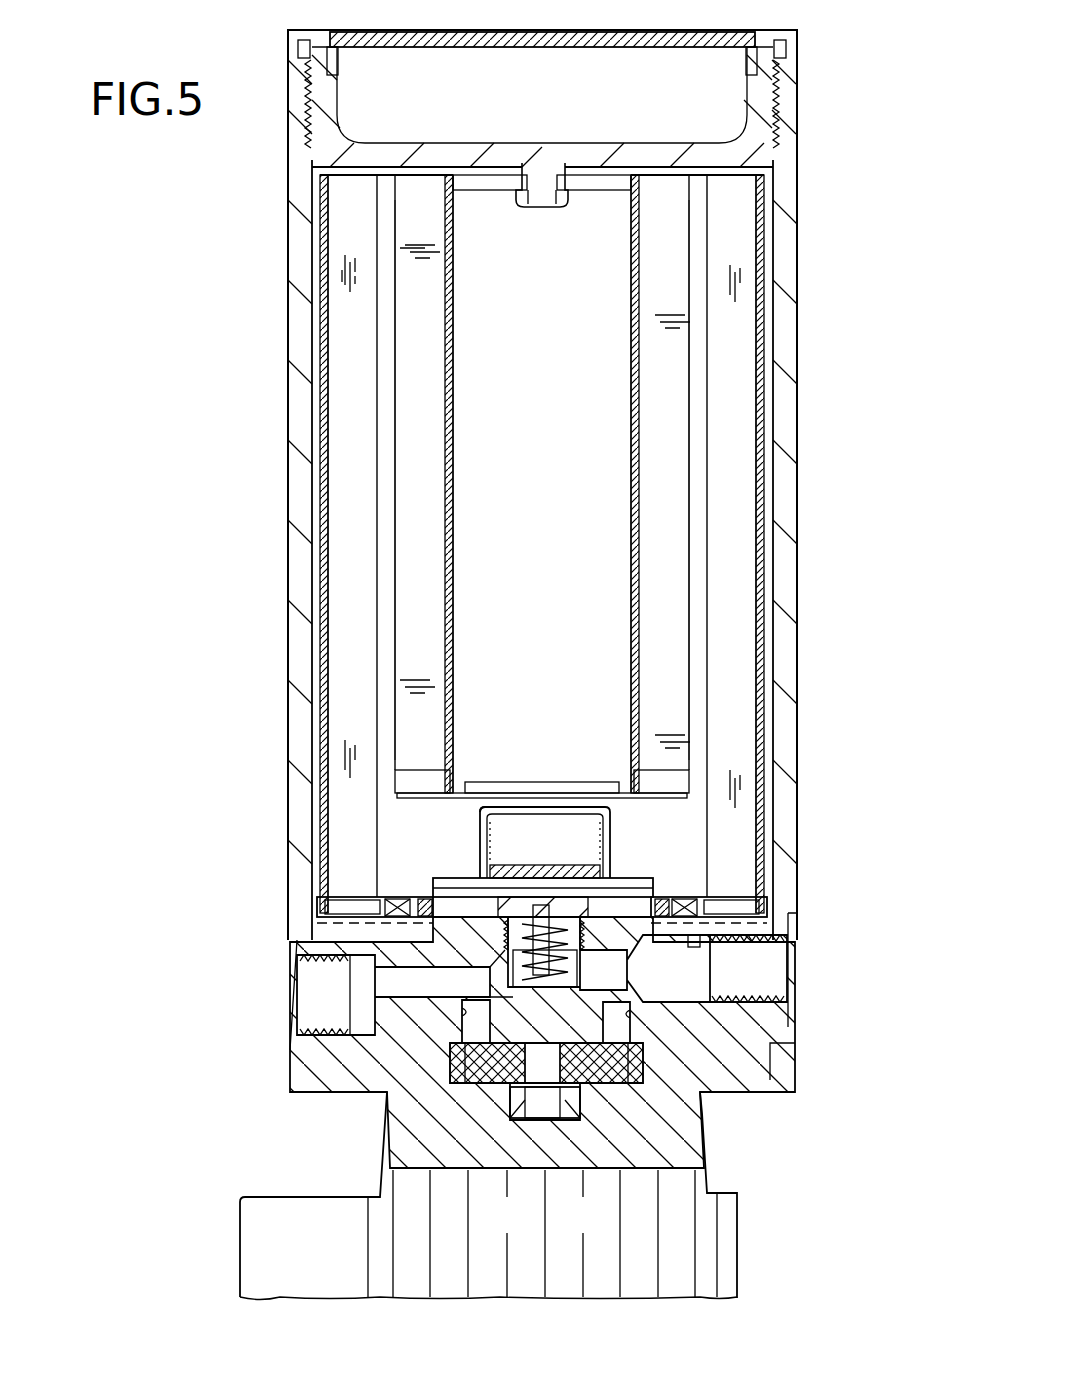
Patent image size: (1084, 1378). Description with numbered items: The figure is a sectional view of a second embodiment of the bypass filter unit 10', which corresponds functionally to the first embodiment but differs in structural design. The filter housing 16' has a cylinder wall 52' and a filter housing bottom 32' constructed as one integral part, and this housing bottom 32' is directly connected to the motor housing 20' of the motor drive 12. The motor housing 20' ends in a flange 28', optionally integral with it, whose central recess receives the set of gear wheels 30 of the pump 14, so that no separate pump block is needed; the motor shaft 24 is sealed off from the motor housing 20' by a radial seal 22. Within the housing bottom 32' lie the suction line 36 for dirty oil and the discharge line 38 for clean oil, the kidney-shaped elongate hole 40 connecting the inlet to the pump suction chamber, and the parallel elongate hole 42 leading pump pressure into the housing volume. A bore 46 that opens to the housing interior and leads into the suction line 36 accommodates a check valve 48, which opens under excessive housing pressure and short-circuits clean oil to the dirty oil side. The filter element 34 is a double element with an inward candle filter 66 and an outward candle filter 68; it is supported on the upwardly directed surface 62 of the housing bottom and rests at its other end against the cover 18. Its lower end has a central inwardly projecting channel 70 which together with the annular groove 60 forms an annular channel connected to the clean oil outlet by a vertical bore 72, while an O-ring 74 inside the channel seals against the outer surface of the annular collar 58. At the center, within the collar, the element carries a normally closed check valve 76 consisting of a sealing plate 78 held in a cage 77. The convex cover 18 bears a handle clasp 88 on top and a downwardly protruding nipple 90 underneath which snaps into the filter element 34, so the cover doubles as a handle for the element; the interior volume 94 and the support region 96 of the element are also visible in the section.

The bypass filter unit 10' is at (621, 485).
The motor drive 12 is at (745, 1285).
The pump 14 is at (282, 1067).
The filter housing 16' is at (502, 490).
The cover 18 is at (770, 18).
The motor housing 20' is at (565, 1196).
The radial seal 22 is at (566, 1096).
The motor shaft 24 is at (530, 1112).
The flange 28' is at (794, 1084).
The set of gear wheels 30 is at (500, 1086).
The filter housing bottom 32' is at (829, 1053).
The filter element 34 is at (716, 332).
The suction line 36 is at (358, 1006).
The discharge line 38 is at (650, 1010).
The kidney-shaped elongate hole 40 is at (476, 1012).
The elongate hole 42 is at (790, 1000).
The bore 46 is at (512, 966).
The check valve 48 is at (596, 902).
The cylinder wall 52' is at (499, 532).
The annular collar 58 is at (700, 888).
The annular groove 60 is at (392, 917).
The upwardly directed surface 62 is at (400, 904).
The inward candle filter 66 is at (672, 515).
The outward candle filter 68 is at (730, 420).
The channel 70 is at (700, 902).
The vertical bore 72 is at (702, 940).
The O-ring 74 is at (424, 898).
The check valve 76 is at (544, 846).
The cage 77 is at (515, 808).
The sealing plate 78 is at (592, 866).
The handle clasp 88 is at (355, 40).
The nipple 90 is at (540, 203).
The central chamber 94 is at (556, 452).
The support tube 96 is at (320, 530).